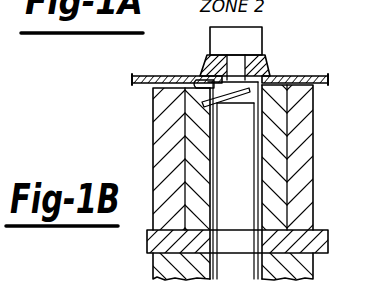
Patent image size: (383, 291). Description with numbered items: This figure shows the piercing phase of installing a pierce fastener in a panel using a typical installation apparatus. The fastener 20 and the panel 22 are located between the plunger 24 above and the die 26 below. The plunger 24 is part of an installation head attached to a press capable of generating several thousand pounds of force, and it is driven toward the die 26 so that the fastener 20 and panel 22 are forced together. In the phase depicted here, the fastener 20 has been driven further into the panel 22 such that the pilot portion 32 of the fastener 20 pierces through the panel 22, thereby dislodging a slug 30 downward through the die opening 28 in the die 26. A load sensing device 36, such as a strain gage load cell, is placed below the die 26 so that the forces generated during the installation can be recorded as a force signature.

The fastener 20 is at (258, 66).
The panel 22 is at (329, 83).
The plunger 24 is at (250, 38).
The die 26 is at (274, 178).
The die opening 28 is at (247, 135).
The slug 30 is at (235, 95).
The pilot portion 32 is at (157, 98).
The load sensing device 36 is at (149, 233).